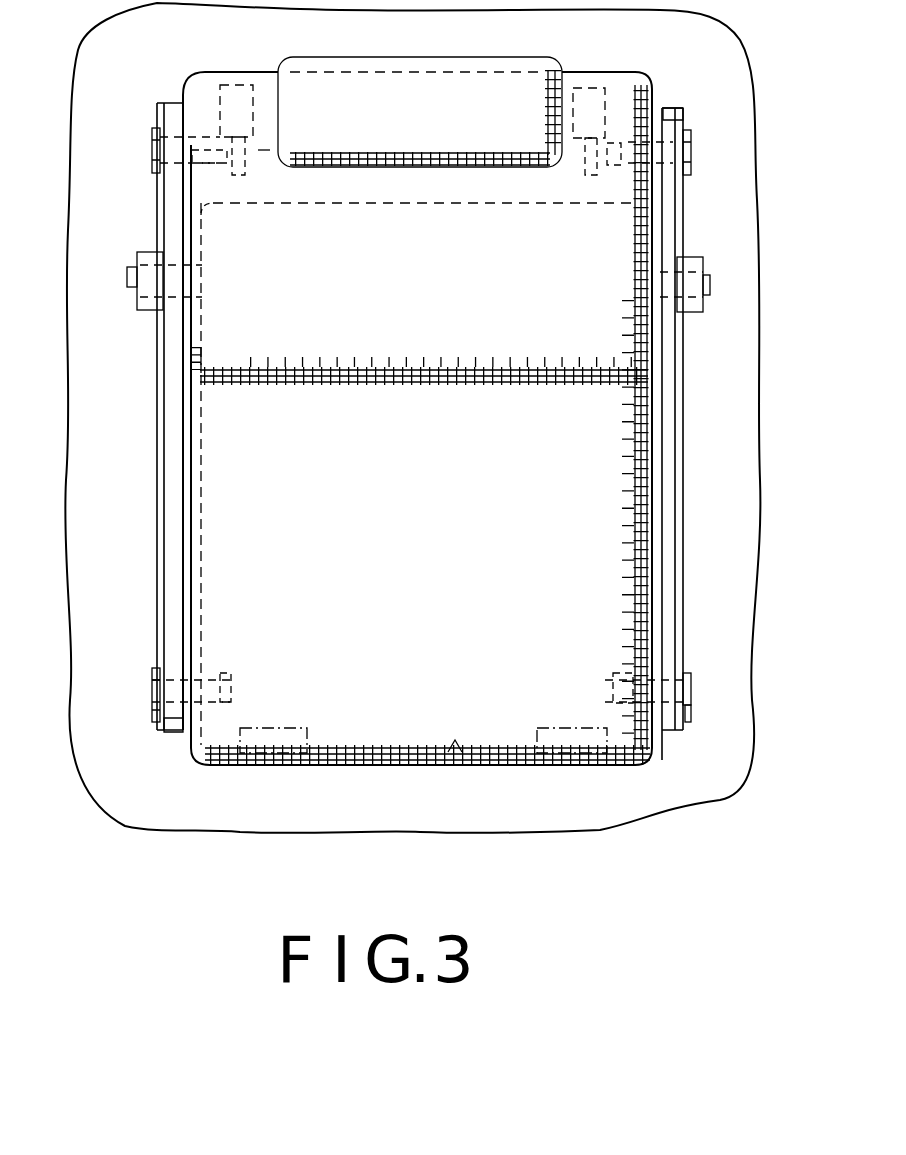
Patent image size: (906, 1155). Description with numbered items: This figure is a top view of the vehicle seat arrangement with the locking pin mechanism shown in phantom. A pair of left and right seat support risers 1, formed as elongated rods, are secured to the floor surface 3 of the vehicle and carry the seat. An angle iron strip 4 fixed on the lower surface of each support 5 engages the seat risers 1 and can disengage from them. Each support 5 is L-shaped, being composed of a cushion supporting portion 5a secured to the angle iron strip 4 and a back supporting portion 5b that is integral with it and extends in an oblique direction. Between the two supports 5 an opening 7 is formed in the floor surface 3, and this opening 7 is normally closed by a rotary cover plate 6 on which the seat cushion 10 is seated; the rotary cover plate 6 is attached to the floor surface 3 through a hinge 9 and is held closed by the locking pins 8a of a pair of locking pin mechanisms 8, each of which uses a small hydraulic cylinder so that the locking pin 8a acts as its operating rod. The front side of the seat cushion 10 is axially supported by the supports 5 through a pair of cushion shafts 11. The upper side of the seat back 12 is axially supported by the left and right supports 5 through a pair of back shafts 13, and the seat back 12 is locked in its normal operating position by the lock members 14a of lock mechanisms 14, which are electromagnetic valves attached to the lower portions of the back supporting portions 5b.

The seat support riser 1 is at (157, 488).
The floor surface 3 is at (745, 470).
The angle iron strip 4 is at (173, 583).
The support 5 is at (160, 440).
The cushion supporting portion 5a is at (167, 642).
The back supporting portion 5b is at (680, 232).
The rotary cover plate 6 is at (350, 730).
The opening 7 is at (470, 767).
The locking pin mechanism 8 is at (232, 85).
The locking pin 8a is at (252, 176).
The hinge 9 is at (263, 753).
The seat cushion 10 is at (431, 778).
The cushion shaft 11 is at (227, 677).
The seat back 12 is at (625, 64).
The back shaft 13 is at (150, 152).
The lock mechanism 14 is at (130, 254).
The lock member 14a is at (133, 287).